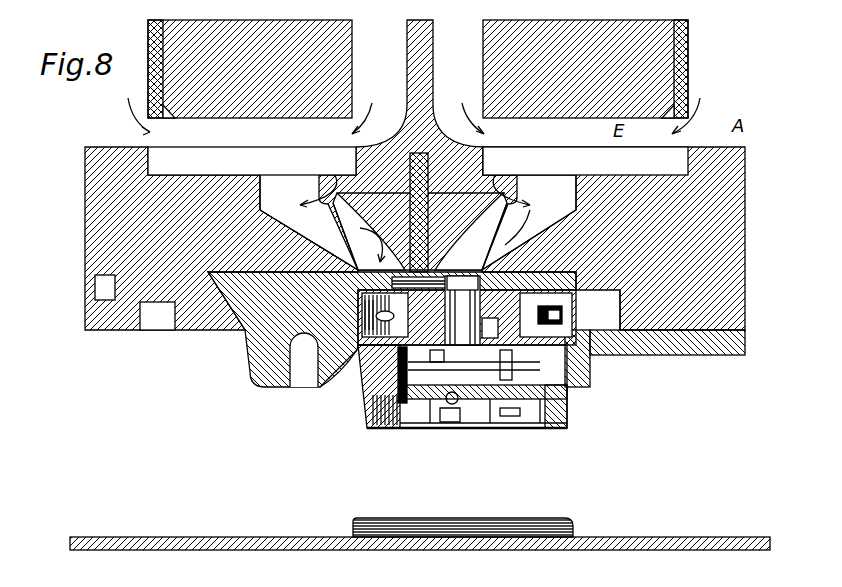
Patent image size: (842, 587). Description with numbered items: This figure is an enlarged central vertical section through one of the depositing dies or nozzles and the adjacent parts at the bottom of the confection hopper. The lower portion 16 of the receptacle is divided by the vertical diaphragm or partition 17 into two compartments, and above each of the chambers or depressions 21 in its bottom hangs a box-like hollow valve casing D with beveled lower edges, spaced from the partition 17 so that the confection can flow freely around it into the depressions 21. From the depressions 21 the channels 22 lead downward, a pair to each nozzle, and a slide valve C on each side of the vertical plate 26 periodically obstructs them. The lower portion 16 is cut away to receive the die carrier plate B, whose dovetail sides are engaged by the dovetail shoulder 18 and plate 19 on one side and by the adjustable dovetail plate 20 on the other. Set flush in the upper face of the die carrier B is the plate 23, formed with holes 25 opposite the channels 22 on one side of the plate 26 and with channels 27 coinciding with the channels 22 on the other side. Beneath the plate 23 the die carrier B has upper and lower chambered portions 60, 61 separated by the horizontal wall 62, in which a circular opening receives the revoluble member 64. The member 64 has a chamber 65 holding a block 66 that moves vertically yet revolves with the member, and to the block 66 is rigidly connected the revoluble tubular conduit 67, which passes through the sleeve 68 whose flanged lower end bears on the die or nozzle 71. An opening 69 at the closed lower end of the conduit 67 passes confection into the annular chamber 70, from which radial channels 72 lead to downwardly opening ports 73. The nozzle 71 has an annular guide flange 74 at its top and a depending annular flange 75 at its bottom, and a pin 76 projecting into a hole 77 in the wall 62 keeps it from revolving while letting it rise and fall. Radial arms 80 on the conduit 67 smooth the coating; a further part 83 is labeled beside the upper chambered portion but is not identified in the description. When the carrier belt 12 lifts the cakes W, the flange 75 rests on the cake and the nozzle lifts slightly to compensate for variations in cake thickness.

The endless carrier belt 12 is at (658, 538).
The lower portion of the receptacle 16 is at (740, 215).
The vertical diaphragm or partition 17 is at (407, 69).
The dovetail shoulder 18 is at (612, 292).
The plate 19 is at (672, 346).
The adjustable dovetail plate 20 is at (200, 330).
The chambers or depressions 21 is at (418, 161).
The channels 22 is at (418, 222).
The plate 23 is at (572, 278).
The holes 25 is at (465, 270).
The vertical plate or partition 26 is at (430, 152).
The channels 27 is at (370, 270).
The upper chambered portion 60 is at (566, 303).
The lower chambered portion 61 is at (590, 378).
The horizontal wall 62 is at (546, 315).
The revoluble member 64 is at (418, 393).
The chamber 65 is at (466, 288).
The block 66 is at (390, 315).
The revoluble tubular conduit 67 is at (476, 350).
The sleeve 68 is at (480, 350).
The opening 69 is at (455, 402).
The annular chamber or channel 70 is at (483, 407).
The die or nozzle 71 is at (400, 430).
The radial channels 72 is at (512, 413).
The downwardly opening ports 73 is at (515, 420).
The annular guide flange 74 is at (357, 390).
The depending annular flange 75 is at (568, 418).
The pin 76 is at (365, 405).
The hole 77 is at (320, 387).
The radial arms 80 is at (468, 418).
The spring seat 83 is at (355, 308).
The die carrier plate B is at (256, 386).
The slide valve C is at (417, 213).
The hollow valve or casing D is at (700, 62).
The cakes W is at (556, 520).